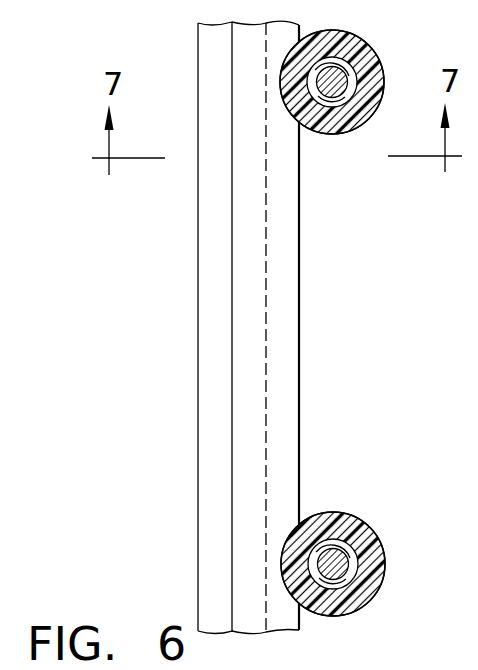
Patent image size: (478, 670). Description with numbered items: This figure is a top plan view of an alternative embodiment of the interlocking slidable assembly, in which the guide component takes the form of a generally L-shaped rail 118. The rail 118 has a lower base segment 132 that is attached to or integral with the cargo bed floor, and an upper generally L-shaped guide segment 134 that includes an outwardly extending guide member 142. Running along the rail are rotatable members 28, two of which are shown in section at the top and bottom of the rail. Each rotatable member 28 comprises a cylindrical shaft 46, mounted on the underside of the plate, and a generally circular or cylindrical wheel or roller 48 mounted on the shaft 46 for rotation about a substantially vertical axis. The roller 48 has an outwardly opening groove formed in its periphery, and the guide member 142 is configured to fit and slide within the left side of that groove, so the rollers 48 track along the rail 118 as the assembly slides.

The rotatable member 28 is at (352, 332).
The cylindrical shaft 46 is at (343, 117).
The roller 48 is at (365, 40).
The L-shaped rail 118 is at (234, 327).
The lower base segment 132 is at (215, 327).
The upper L-shaped guide segment 134 is at (245, 397).
The guide member 142 is at (283, 352).